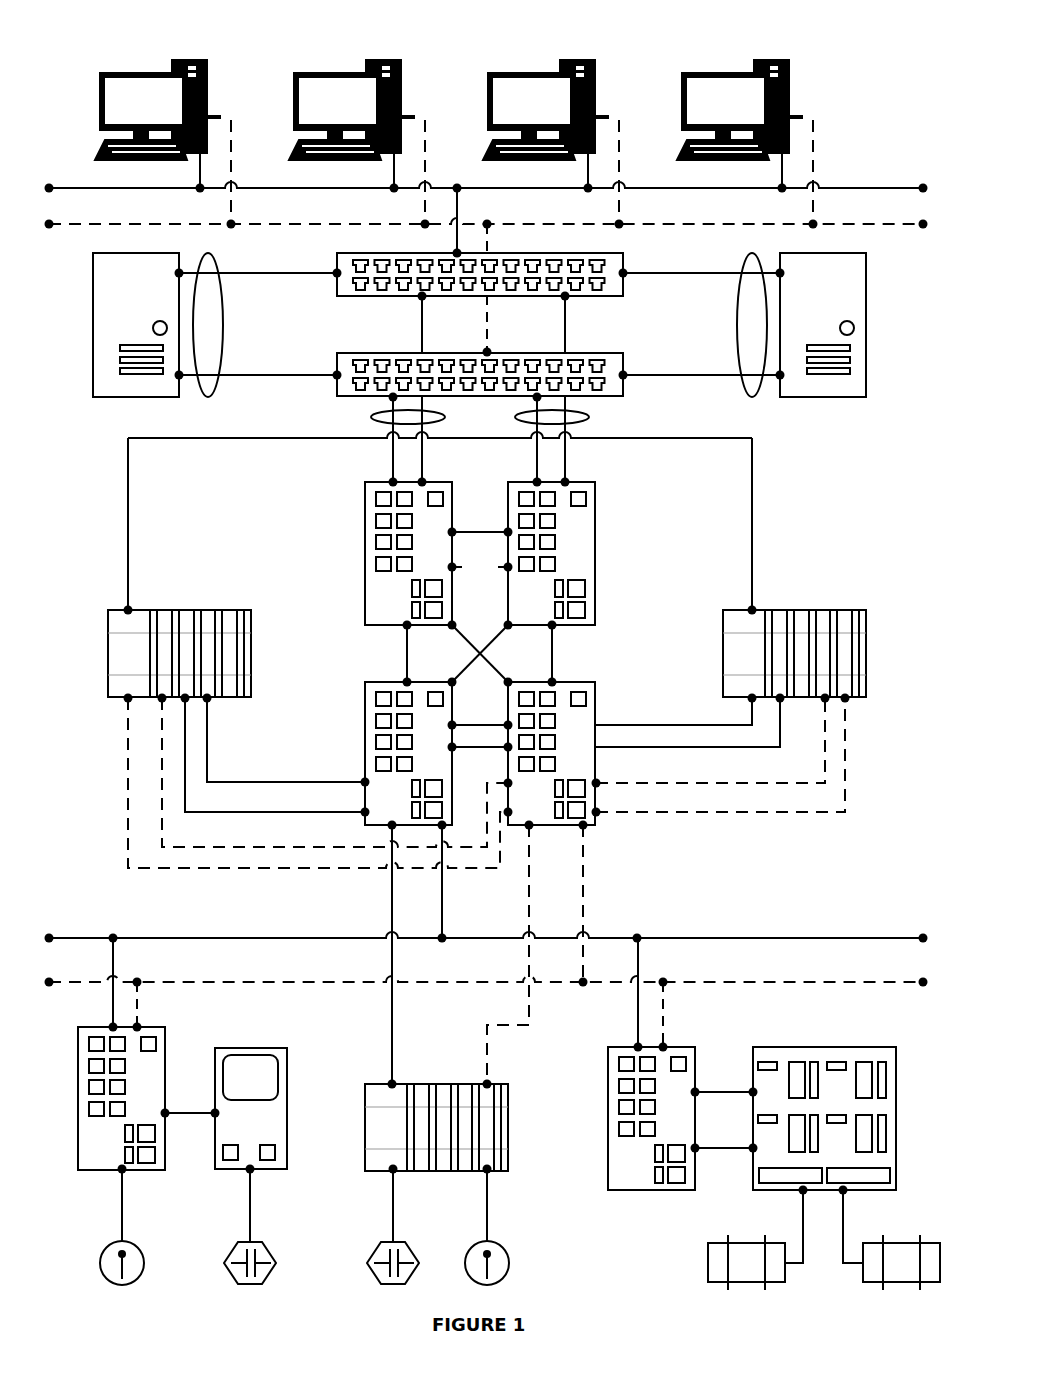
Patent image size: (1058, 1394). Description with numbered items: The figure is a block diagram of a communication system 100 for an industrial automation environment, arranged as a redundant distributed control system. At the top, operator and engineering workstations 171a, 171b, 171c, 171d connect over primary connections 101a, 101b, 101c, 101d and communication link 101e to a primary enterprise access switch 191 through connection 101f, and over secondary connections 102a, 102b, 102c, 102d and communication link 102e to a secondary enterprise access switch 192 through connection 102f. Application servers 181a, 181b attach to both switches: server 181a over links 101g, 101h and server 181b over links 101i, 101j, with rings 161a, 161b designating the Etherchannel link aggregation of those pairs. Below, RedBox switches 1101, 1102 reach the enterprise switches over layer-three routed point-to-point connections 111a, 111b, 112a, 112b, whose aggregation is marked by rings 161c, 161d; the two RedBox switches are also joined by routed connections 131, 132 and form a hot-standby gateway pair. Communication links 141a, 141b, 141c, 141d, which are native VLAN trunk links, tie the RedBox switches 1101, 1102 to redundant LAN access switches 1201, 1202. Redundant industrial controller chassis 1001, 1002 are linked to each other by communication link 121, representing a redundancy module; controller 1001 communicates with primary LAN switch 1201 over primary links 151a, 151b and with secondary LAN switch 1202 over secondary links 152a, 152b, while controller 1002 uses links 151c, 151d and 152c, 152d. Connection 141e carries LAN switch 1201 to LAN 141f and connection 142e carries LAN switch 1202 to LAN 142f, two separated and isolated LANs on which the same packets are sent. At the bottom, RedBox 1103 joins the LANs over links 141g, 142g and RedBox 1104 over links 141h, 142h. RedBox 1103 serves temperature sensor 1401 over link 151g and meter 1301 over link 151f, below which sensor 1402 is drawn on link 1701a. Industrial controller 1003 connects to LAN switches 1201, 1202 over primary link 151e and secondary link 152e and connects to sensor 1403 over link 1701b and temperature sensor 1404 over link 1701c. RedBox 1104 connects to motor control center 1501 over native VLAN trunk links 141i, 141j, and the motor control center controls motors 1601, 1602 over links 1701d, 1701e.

The communication system 100 is at (874, 72).
The operator and engineering workstation 171a is at (207, 70).
The operator and engineering workstation 171b is at (401, 70).
The operator and engineering workstation 171c is at (595, 70).
The operator and engineering workstation 171d is at (789, 70).
The primary connection 101a is at (197, 182).
The primary connection 101b is at (391, 182).
The primary connection 101c is at (585, 182).
The primary connection 101d is at (779, 182).
The communication link 101e is at (908, 184).
The primary switch connection 101f is at (456, 247).
The link 101g is at (264, 272).
The link 101h is at (266, 380).
The link 101i is at (684, 272).
The link 101j is at (686, 380).
The secondary connection 102a is at (234, 158).
The secondary connection 102b is at (428, 158).
The secondary connection 102c is at (622, 158).
The secondary connection 102d is at (816, 158).
The communication link 102e is at (916, 230).
The secondary switch connection 102f is at (490, 336).
The primary enterprise access switch 191 is at (336, 291).
The secondary enterprise access switch 192 is at (336, 355).
The layer 3 routed point-to-point connection 111a is at (420, 322).
The layer 3 routed point-to-point connection 111b is at (568, 322).
The application server 181a is at (91, 324).
The application server 181b is at (870, 324).
The ring 161a is at (224, 326).
The ring 161b is at (736, 326).
The ring 161c is at (372, 420).
The ring 161d is at (588, 420).
The layer 3 routed point-to-point connection 112a is at (390, 466).
The layer 3 routed point-to-point connection 112b is at (534, 466).
The communication link 121 is at (672, 442).
The layer 3 routed point-to-point connection 131 is at (478, 529).
The layer 3 routed point-to-point connection 132 is at (470, 572).
The Redundancy Box (RedBox) switch 1101 is at (364, 554).
The Redundancy Box (RedBox) switch 1102 is at (597, 554).
The RedBox switch 1103 is at (167, 1035).
The RedBox switch 1104 is at (608, 1122).
The redundant industrial controller chassis 1001 is at (191, 608).
The redundant industrial controller chassis 1002 is at (814, 608).
The industrial controller 1003 is at (433, 1079).
The communication link 141a is at (405, 661).
The communication link 141b is at (456, 639).
The communication link 141c is at (535, 645).
The communication link 141d is at (556, 661).
The connection 141e is at (444, 896).
The LAN 141f is at (890, 939).
The link 141g is at (110, 1009).
The link 141h is at (635, 1024).
The native VLAN trunk link 141i is at (722, 1087).
The native VLAN trunk link 141j is at (724, 1153).
The primary LAN access switch 1201 is at (364, 688).
The secondary LAN access switch 1202 is at (596, 688).
The primary communication link 151a is at (278, 781).
The primary communication link 151b is at (278, 814).
The link 151c is at (684, 724).
The link 151d is at (686, 750).
The primary link 151e is at (388, 924).
The link 151f is at (188, 1107).
The link 151g is at (119, 1214).
The secondary communication link 152a is at (198, 856).
The secondary communication link 152b is at (200, 872).
The link 152c is at (750, 791).
The link 152d is at (752, 814).
The secondary link 152e is at (527, 924).
The connection 142e is at (584, 896).
The LAN 142f is at (892, 987).
The link 142g is at (139, 1002).
The link 142h is at (664, 1024).
The meter 1301 is at (286, 1061).
The motor control center 1501 is at (818, 1044).
The field device link 1701a is at (248, 1214).
The link 1701b is at (391, 1214).
The link 1701c is at (494, 1214).
The link 1701d is at (800, 1219).
The link 1701e is at (851, 1219).
The temperature sensor 1401 is at (102, 1254).
The sensor 1402 is at (232, 1254).
The sensor 1403 is at (375, 1254).
The temperature sensor 1404 is at (504, 1254).
The motor 1601 is at (743, 1284).
The motor 1602 is at (898, 1284).